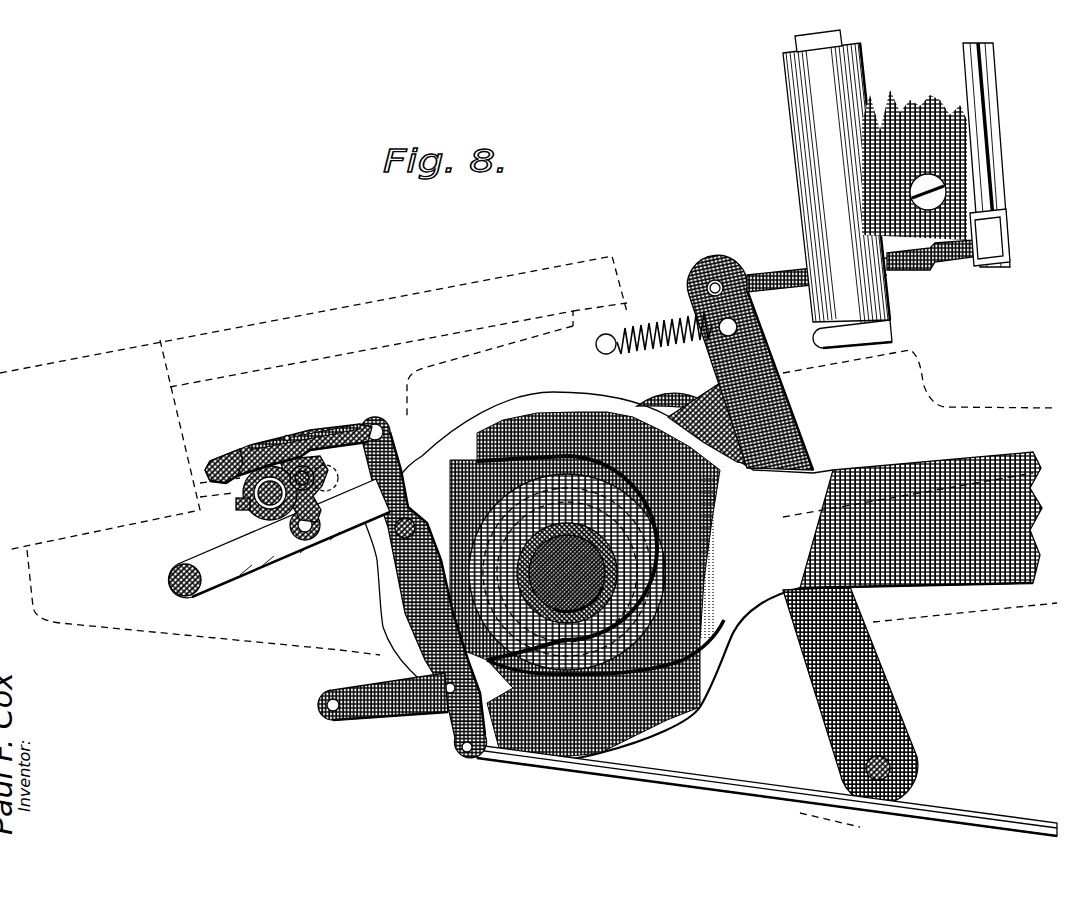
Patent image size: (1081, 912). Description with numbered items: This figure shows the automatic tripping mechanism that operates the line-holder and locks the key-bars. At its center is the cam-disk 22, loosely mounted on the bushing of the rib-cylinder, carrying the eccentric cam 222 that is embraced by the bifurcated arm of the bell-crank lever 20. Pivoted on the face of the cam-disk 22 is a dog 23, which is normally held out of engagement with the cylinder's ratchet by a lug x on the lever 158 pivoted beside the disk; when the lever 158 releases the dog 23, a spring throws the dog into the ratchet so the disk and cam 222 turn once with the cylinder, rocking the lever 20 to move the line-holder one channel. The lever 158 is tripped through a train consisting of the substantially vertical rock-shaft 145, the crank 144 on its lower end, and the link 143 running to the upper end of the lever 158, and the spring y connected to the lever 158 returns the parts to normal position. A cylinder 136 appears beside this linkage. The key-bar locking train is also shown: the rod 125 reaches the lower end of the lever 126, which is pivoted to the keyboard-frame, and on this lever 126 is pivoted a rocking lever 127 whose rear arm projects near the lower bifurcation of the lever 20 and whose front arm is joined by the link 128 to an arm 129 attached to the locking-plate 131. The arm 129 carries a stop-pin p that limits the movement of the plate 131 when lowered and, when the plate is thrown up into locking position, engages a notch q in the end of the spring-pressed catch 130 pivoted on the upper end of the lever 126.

The bell-crank lever 20 is at (912, 520).
The cam-disk 22 is at (597, 564).
The dog 23 is at (645, 402).
The eccentric cam 222 is at (567, 572).
The rod 125 is at (737, 782).
The lever 126 is at (423, 587).
The rocking lever 127 is at (395, 718).
The link 128 is at (312, 594).
The arm 129 is at (300, 488).
The catch 130 is at (352, 421).
The locking-plate 131 is at (295, 433).
The cylinder 136 is at (800, 42).
The link 143 is at (770, 273).
The crank 144 is at (995, 262).
The rock-shaft 145 is at (993, 128).
The lever 158 is at (748, 442).
The lug x is at (710, 424).
The spring y is at (660, 297).
The stop-pin p is at (275, 436).
The notch q is at (233, 458).